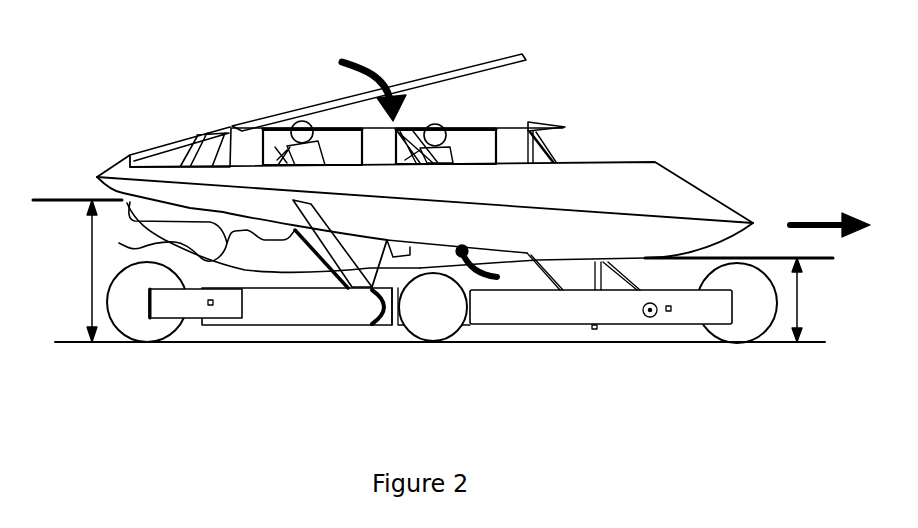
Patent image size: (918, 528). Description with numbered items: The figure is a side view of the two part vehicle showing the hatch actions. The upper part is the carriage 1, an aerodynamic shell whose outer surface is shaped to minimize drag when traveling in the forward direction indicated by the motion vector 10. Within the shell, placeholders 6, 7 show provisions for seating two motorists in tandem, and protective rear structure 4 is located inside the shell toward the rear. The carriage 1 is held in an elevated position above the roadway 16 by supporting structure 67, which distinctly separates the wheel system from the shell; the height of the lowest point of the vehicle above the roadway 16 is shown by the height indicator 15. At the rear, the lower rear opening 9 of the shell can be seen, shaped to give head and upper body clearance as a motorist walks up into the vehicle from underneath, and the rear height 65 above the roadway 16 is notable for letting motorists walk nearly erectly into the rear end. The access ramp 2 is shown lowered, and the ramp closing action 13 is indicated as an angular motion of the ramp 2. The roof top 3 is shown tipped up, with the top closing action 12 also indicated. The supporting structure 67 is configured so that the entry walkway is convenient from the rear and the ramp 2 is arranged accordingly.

The carriage 1 is at (703, 197).
The access ramp 2 is at (537, 262).
The roof top 3 is at (472, 70).
The protective rear structure 4 is at (170, 140).
The motorist placeholder 6 is at (462, 130).
The motorist placeholder 7 is at (318, 152).
The lower rear opening 9 is at (122, 243).
The motion vector 10 is at (808, 225).
The top closing action 12 is at (371, 68).
The ramp closing action 13 is at (500, 262).
The elevation height 15 is at (798, 308).
The roadway 16 is at (110, 343).
The rear height 65 is at (92, 288).
The supporting structure 67 is at (617, 292).